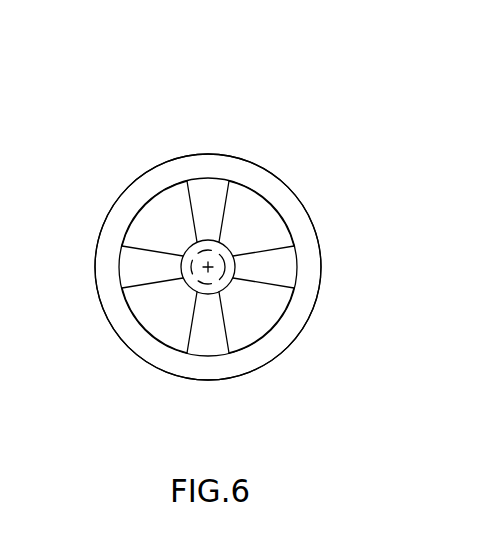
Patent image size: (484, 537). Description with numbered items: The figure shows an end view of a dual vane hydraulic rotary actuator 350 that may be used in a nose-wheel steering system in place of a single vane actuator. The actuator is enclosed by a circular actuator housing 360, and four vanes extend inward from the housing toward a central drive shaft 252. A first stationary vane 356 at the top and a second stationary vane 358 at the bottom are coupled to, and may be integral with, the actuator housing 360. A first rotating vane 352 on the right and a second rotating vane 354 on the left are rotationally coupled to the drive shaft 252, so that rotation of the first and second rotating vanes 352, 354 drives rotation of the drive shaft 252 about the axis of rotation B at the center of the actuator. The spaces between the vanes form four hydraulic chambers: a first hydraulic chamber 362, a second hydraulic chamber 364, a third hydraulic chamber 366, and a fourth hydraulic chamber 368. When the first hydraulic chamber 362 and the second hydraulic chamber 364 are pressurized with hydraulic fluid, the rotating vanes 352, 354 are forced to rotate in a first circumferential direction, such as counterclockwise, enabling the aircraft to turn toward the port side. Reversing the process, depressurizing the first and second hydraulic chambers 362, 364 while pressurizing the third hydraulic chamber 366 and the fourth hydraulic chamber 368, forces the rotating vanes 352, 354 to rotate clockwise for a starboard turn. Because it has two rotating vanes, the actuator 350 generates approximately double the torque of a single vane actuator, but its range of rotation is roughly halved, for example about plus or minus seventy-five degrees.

The dual vane hydraulic rotary actuator 350 is at (185, 122).
The actuator housing 360 is at (283, 203).
The first stationary vane 356 is at (208, 203).
The first rotating vane 352 is at (275, 263).
The second rotating vane 354 is at (143, 275).
The second stationary vane 358 is at (204, 333).
The drive shaft 252 is at (229, 250).
The axis of rotation B is at (200, 268).
The first hydraulic chamber 362 is at (258, 325).
The second hydraulic chamber 364 is at (173, 232).
The third hydraulic chamber 366 is at (255, 219).
The fourth hydraulic chamber 368 is at (175, 330).